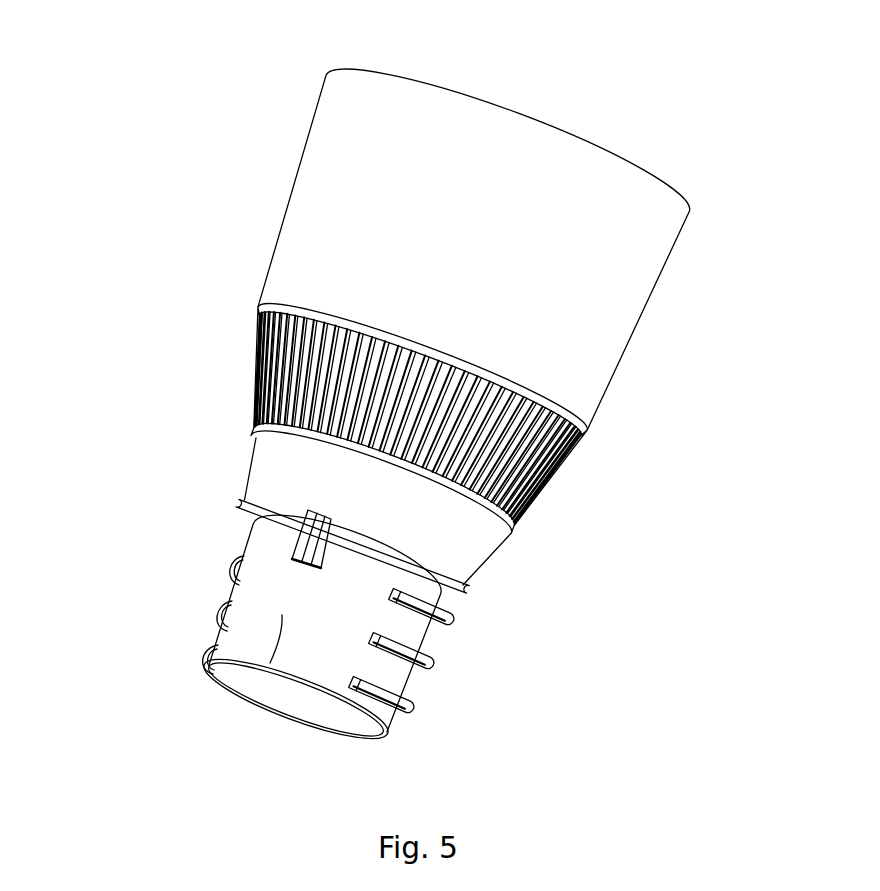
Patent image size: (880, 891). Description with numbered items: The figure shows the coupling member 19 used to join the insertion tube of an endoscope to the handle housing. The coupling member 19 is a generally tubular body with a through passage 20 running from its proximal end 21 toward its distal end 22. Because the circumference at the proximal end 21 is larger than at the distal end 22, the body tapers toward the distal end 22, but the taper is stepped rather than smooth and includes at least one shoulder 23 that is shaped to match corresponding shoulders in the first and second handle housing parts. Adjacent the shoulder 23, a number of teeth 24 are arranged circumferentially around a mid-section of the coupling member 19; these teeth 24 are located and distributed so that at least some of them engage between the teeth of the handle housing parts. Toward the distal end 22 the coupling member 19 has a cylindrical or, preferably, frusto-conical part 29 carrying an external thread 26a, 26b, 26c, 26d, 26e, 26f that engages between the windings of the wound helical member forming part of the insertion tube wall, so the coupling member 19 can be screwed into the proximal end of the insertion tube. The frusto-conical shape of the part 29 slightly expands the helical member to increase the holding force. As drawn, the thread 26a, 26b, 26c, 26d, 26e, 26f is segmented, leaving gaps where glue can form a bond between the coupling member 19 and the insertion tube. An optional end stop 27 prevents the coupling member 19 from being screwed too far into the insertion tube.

The coupling member 19 is at (160, 219).
The through passage 20 is at (288, 735).
The proximal end 21 is at (533, 120).
The distal end 22 is at (243, 686).
The shoulder 23 is at (270, 323).
The teeth 24 is at (547, 470).
The external thread segment 26a is at (203, 652).
The external thread segment 26b is at (214, 610).
The external thread segment 26c is at (232, 562).
The external thread segment 26d is at (410, 712).
The external thread segment 26e is at (432, 668).
The external thread segment 26f is at (450, 623).
The end stop 27 is at (290, 557).
The frusto-conical part 29 is at (282, 615).